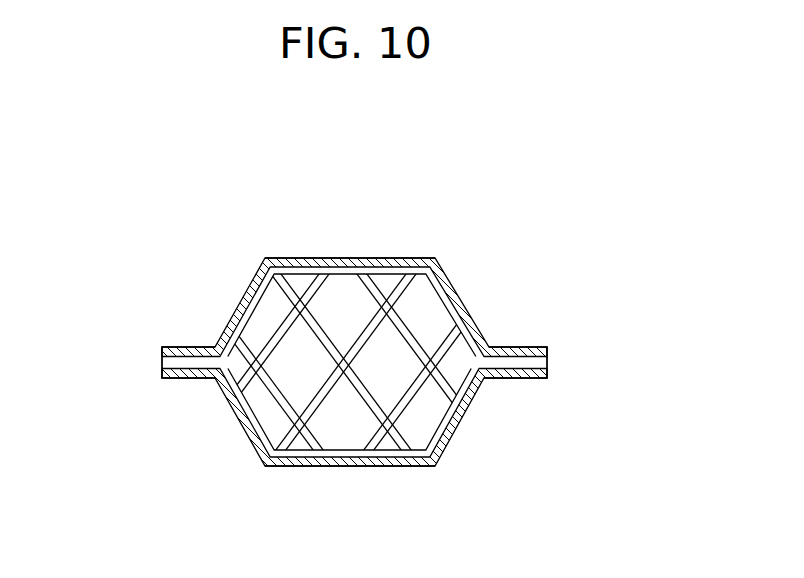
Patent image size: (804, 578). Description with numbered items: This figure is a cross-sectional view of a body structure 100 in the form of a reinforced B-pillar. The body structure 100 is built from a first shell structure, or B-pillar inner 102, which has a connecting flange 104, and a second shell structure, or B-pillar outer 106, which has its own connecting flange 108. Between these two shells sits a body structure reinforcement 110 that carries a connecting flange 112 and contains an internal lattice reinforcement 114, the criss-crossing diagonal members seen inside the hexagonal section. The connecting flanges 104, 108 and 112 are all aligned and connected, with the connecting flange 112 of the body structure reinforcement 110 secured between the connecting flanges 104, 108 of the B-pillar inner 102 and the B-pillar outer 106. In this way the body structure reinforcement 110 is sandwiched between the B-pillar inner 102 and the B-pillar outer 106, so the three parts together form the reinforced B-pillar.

The body structure 100 is at (575, 218).
The first shell structure/B-pillar inner 102 is at (364, 258).
The connecting flange 104 is at (172, 347).
The second shell structure/B-pillar outer 106 is at (305, 467).
The connecting flange 108 is at (178, 380).
The body structure reinforcement 110 is at (430, 277).
The connecting flange 112 is at (172, 363).
The internal lattice reinforcement 114 is at (268, 330).